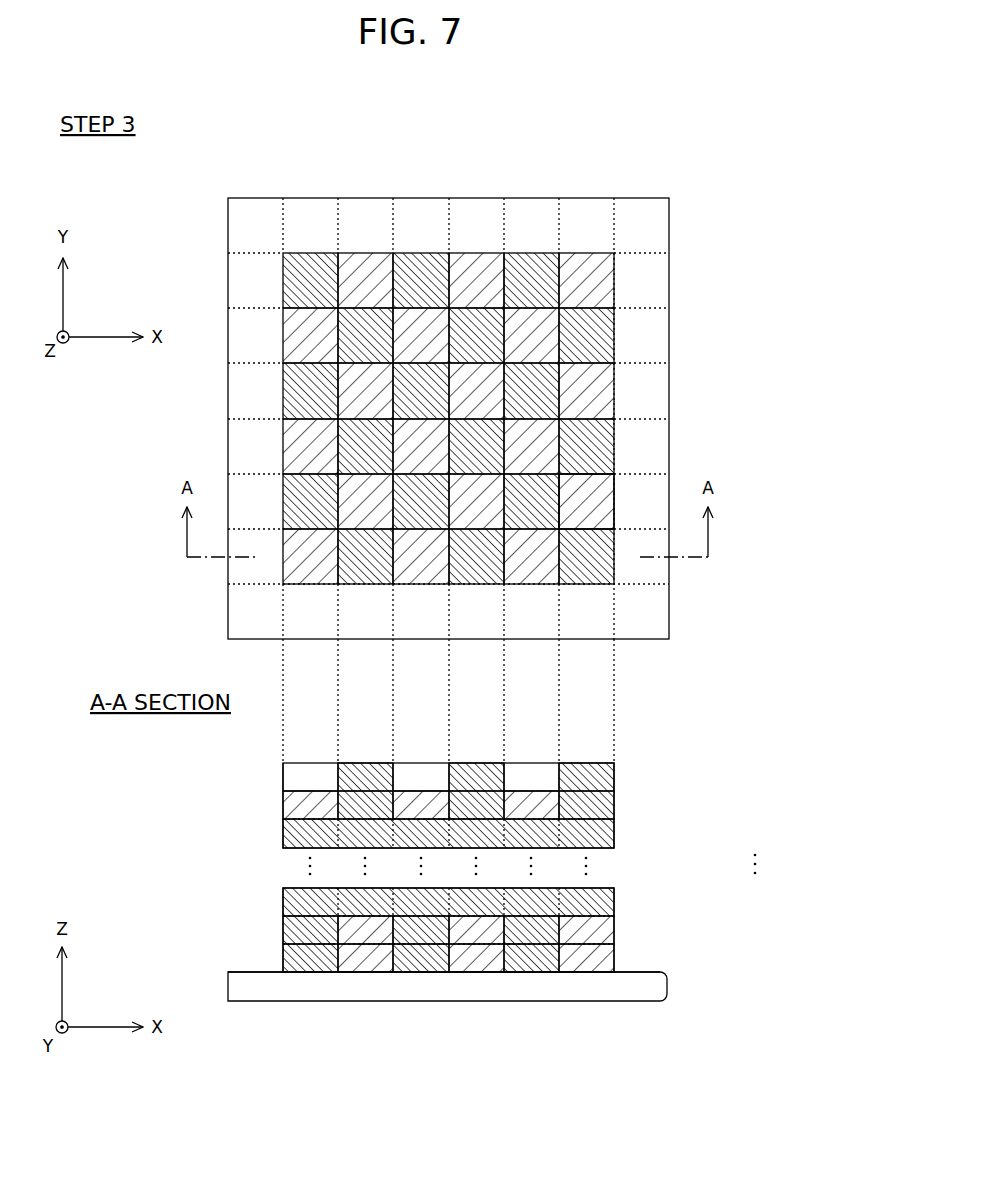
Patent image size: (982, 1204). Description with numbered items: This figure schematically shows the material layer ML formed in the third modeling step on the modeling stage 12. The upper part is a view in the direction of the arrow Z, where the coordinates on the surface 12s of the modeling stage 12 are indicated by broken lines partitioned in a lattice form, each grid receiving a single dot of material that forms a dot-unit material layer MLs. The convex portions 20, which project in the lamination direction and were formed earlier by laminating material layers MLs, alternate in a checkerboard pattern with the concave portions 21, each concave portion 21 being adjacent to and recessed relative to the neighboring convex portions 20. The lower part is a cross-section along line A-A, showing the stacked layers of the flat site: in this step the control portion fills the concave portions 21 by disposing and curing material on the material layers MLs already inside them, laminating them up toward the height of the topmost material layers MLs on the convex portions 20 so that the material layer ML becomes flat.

The modeling stage 12 is at (228, 226).
The surface of the modeling stage 12s is at (250, 283).
The convex portion 20 is at (539, 575).
The concave portion 21 is at (527, 775).
The material layer ML is at (527, 244).
The material layer of a dot unit MLs is at (598, 504).